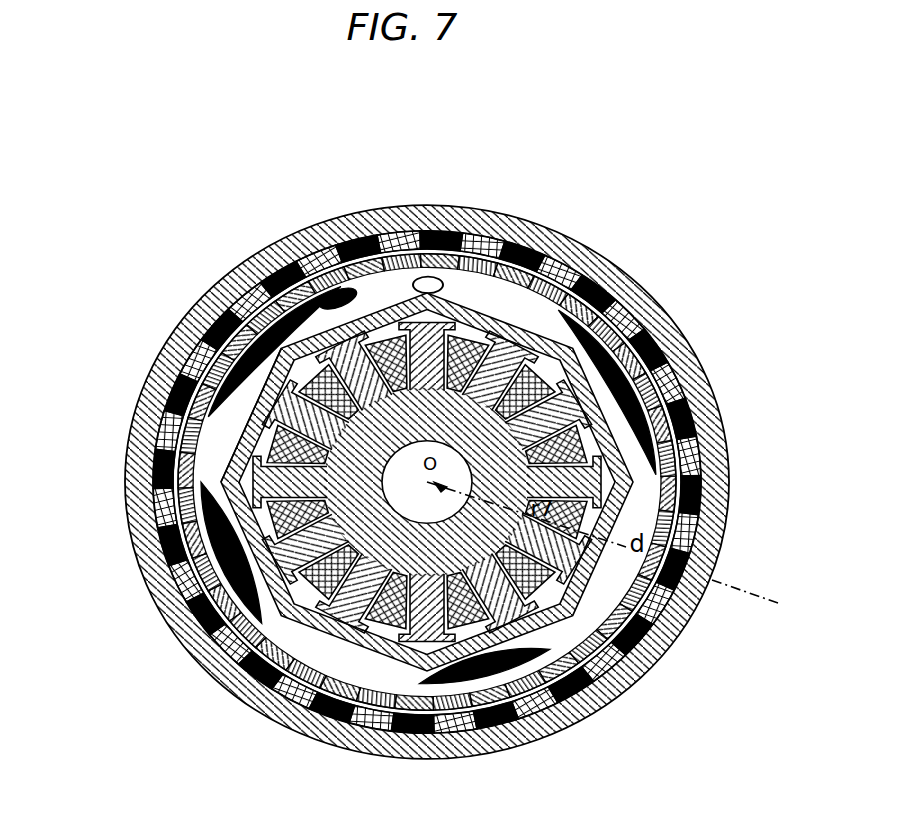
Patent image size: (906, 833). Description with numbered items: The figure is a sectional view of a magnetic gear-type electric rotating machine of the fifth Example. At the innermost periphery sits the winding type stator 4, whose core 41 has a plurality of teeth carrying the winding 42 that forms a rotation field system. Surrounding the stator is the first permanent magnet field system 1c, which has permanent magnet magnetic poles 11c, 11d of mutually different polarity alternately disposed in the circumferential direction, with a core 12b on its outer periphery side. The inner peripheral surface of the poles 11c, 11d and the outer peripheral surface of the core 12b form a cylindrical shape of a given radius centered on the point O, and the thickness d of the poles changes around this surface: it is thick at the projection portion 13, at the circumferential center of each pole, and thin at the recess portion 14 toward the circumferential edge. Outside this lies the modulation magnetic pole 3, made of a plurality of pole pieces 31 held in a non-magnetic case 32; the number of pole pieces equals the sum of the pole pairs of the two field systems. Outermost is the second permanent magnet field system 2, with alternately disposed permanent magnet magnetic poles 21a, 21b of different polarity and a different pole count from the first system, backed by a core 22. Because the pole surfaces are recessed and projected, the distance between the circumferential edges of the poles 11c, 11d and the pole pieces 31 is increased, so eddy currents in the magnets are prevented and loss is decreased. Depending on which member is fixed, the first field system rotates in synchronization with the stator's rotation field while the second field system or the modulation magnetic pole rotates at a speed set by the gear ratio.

The second permanent magnet field system 2 is at (480, 213).
The core 22 is at (434, 469).
The permanent magnet magnetic pole 21a is at (400, 482).
The permanent magnet magnetic pole 21b is at (645, 333).
The modulation magnetic pole 3 is at (682, 497).
The pole piece 31 is at (652, 561).
The non-magnetic case 32 is at (616, 647).
The first permanent magnet field system 1c is at (267, 343).
The permanent magnet magnetic pole 11c is at (312, 312).
The permanent magnet magnetic pole 11d is at (202, 402).
The core 12b is at (227, 443).
The projection portion 13 is at (330, 292).
The recess portion 14 is at (426, 276).
The winding type stator 4 is at (399, 565).
The core 41 is at (420, 646).
The winding 42 is at (383, 622).